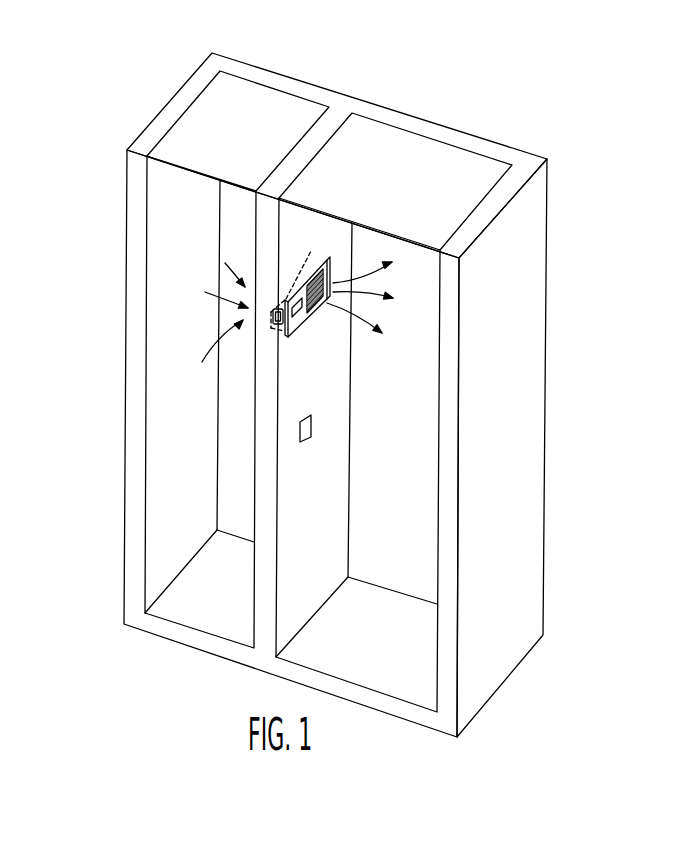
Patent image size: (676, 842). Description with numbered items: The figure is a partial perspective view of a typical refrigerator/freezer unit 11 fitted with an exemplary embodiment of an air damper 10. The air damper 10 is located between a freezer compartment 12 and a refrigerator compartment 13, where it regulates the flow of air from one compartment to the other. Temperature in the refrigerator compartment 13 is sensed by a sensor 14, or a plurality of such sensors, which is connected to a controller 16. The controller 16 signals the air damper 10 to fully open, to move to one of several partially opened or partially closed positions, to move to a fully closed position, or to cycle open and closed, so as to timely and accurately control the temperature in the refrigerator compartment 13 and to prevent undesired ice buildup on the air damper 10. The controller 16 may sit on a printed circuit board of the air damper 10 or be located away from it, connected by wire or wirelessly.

The air damper 10 is at (307, 262).
The refrigerator/freezer unit 11 is at (385, 82).
The freezer compartment 12 is at (178, 263).
The refrigerator compartment 13 is at (407, 367).
The sensor 14 is at (300, 427).
The controller 16 is at (278, 307).